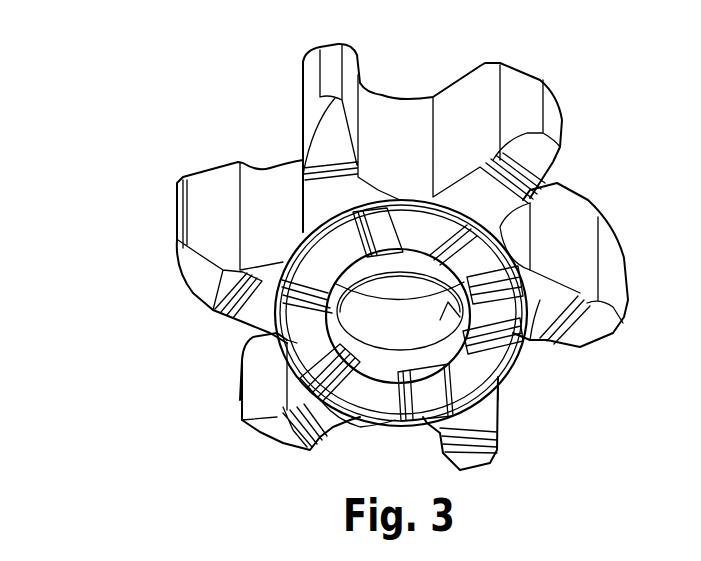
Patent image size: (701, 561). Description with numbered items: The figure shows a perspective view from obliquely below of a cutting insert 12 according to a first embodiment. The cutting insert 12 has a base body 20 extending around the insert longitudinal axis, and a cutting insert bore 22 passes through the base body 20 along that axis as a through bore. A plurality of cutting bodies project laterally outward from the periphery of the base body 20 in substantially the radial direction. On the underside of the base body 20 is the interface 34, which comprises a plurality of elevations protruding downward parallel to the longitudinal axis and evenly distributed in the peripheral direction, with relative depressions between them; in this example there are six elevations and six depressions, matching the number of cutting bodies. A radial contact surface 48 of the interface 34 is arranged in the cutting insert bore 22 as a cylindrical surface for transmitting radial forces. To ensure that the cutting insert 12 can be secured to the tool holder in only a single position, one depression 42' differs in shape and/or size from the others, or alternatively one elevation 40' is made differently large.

The cutting insert 12 is at (190, 104).
The base body 20 is at (520, 233).
The cutting insert bore 22 is at (402, 330).
The interface 34 is at (522, 382).
The elevation 40' is at (525, 410).
The depression 42' is at (532, 323).
The radial contact surface 48 is at (530, 270).